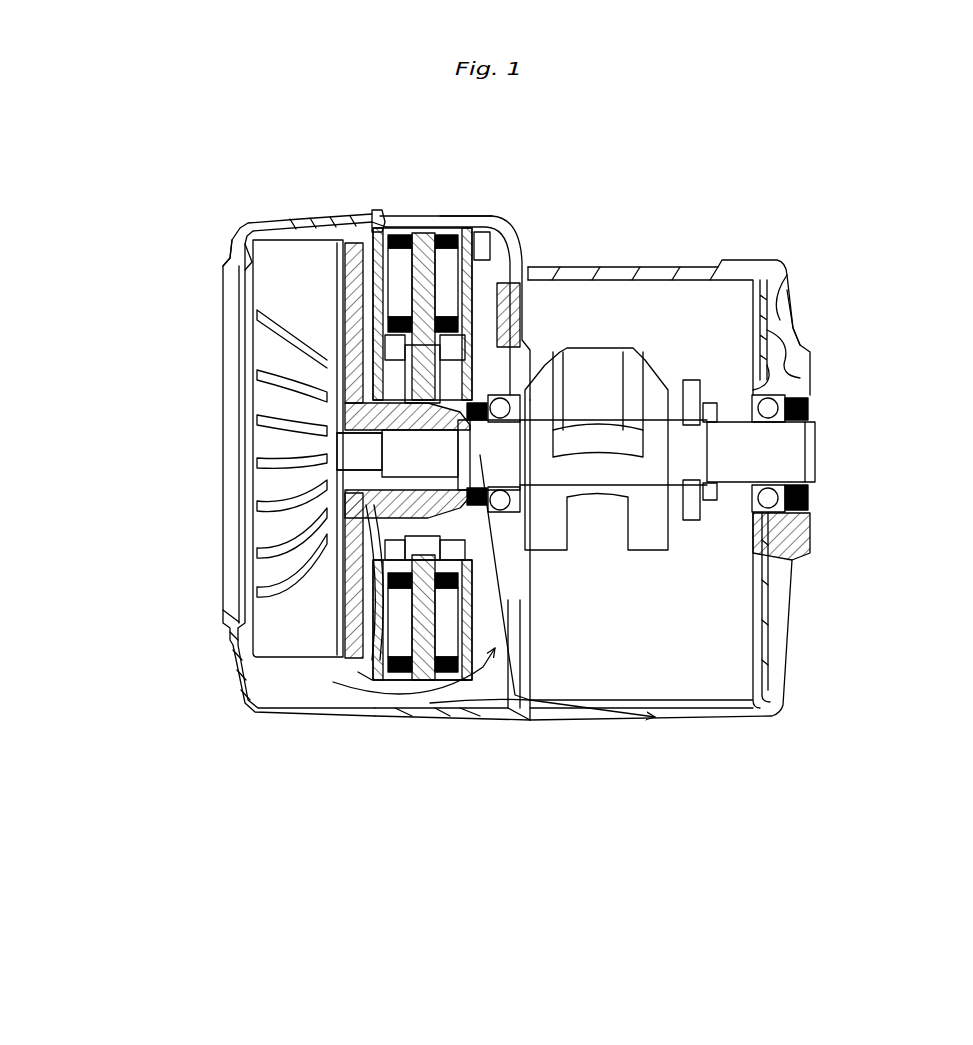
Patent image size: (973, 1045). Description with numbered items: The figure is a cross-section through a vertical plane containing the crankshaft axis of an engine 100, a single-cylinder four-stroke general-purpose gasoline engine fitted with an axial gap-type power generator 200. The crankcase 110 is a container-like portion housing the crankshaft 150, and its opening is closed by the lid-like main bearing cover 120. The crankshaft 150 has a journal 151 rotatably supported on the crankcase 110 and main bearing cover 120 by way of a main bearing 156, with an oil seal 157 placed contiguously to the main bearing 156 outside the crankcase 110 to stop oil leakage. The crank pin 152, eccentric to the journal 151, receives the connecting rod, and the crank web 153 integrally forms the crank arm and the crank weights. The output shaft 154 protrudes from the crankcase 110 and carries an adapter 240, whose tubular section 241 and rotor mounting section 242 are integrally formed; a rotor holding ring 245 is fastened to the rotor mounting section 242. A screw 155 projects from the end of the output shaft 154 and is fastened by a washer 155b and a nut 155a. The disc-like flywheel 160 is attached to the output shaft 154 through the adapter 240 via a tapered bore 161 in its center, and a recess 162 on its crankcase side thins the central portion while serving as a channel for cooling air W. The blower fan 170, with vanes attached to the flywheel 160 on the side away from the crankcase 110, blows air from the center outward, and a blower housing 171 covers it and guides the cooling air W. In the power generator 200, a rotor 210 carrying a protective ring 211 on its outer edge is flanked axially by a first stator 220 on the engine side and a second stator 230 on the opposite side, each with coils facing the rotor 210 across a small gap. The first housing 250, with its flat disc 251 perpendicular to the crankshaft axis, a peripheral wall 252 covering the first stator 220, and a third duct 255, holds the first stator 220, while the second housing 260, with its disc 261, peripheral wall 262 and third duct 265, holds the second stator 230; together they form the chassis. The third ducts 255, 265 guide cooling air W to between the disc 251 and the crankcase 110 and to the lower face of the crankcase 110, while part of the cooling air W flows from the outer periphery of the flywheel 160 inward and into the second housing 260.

The engine 100 is at (763, 220).
The crankcase 110 is at (687, 270).
The main bearing cover 120 is at (775, 345).
The crankshaft 150 is at (828, 452).
The journal 151 is at (735, 465).
The crank pin 152 is at (599, 358).
The crank web 153 is at (568, 530).
The output shaft 154 is at (407, 447).
The screw 155 is at (348, 453).
The nut 155a is at (348, 430).
The washer 155b is at (355, 498).
The main bearing 156 is at (517, 387).
The oil seal 157 is at (507, 396).
The flywheel 160 is at (353, 292).
The tapered bore 161 is at (392, 422).
The recess 162 is at (357, 535).
The blower fan 170 is at (270, 260).
The blower housing 171 is at (233, 252).
The axial gap-type power generator 200 is at (449, 192).
The rotor 210 is at (418, 255).
The protective ring 211 is at (425, 235).
The first stator 220 is at (460, 263).
The second stator 230 is at (397, 277).
The adapter 240 is at (372, 492).
The tubular section 241 is at (410, 413).
The rotor mounting section 242 is at (430, 367).
The rotor holding ring 245 is at (392, 345).
The first housing 250 is at (468, 222).
The disc 251 is at (523, 727).
The peripheral wall 252 is at (468, 723).
The third duct 255 is at (442, 718).
The second housing 260 is at (378, 228).
The disc 261 is at (358, 672).
The peripheral wall 262 is at (387, 683).
The third duct 265 is at (403, 718).
The cooling air W is at (479, 682).